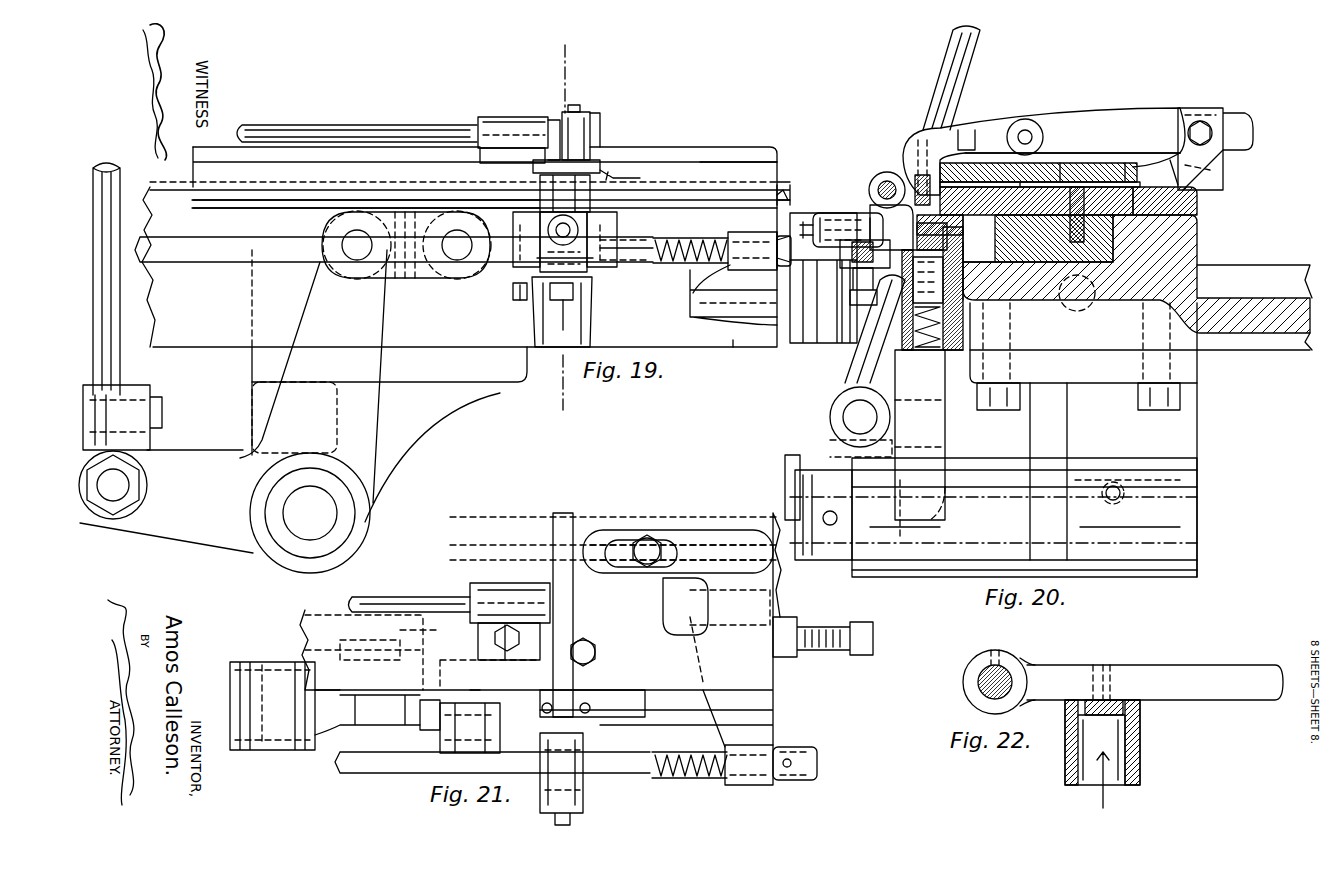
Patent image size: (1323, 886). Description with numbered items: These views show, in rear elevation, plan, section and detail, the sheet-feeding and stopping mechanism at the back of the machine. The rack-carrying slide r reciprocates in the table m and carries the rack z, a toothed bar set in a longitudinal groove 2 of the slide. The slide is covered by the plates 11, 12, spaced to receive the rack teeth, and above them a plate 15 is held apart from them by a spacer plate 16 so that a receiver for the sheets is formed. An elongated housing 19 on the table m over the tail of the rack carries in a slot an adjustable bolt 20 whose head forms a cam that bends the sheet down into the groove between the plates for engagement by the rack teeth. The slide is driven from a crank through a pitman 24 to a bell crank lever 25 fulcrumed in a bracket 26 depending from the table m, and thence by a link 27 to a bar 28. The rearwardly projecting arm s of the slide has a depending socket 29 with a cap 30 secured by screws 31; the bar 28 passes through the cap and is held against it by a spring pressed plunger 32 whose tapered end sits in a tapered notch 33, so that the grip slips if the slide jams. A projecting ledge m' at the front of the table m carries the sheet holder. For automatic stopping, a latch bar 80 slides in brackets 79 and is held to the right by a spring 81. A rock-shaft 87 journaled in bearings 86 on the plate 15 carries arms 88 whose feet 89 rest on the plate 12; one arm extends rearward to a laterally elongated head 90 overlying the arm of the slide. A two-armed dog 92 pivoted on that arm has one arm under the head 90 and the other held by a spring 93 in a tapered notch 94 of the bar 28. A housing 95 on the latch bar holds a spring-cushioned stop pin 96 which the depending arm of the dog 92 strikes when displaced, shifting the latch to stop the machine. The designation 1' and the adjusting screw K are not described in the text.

In FIG. 20, the cross-head plate 1' is at (1054, 238).
In FIG. 20, the longitudinal groove 2 is at (1137, 299).
In FIG. 19, the plate 11 is at (790, 203).
In FIG. 20, the plate 11 is at (1036, 201).
In FIG. 20, the plate 12 is at (1161, 201).
In FIG. 19, the plate 15 is at (770, 173).
In FIG. 20, the plate 15 is at (1080, 170).
In FIG. 21, the plate 15 is at (776, 597).
In FIG. 19, the spacer plate 16 is at (790, 187).
In FIG. 20, the spacer plate 16 is at (960, 238).
In FIG. 21, the elongated housing 19 is at (722, 537).
In FIG. 19, the bolt 20 is at (578, 225).
In FIG. 21, the bolt 20 is at (650, 546).
In FIG. 19, the pitman 24 is at (121, 322).
In FIG. 20, the pitman 24 is at (969, 95).
In FIG. 19, the bell crank lever 25 is at (187, 532).
In FIG. 20, the bell crank lever 25 is at (940, 433).
In FIG. 19, the bracket 26 is at (443, 432).
In FIG. 20, the bracket 26 is at (1195, 435).
In FIG. 19, the link 27 is at (431, 276).
In FIG. 21, the link 27 is at (307, 745).
In FIG. 19, the bar 28 is at (698, 238).
In FIG. 20, the bar 28 is at (970, 265).
In FIG. 21, the bar 28 is at (622, 712).
In FIG. 22, the bar 28 is at (1123, 682).
In FIG. 20, the depending socket 29 is at (903, 322).
In FIG. 19, the cap 30 is at (552, 312).
In FIG. 20, the cap 30 is at (936, 209).
In FIG. 21, the cap 30 is at (432, 727).
In FIG. 19, the screws 31 is at (603, 290).
In FIG. 21, the screws 31 is at (417, 648).
In FIG. 20, the spring pressed plunger 32 is at (945, 300).
In FIG. 22, the spring pressed plunger 32 is at (1140, 745).
In FIG. 21, the tapered notch 33 is at (565, 632).
In FIG. 22, the tapered notch 33 is at (1088, 698).
In FIG. 19, the brackets 79 is at (746, 243).
In FIG. 21, the brackets 79 is at (737, 785).
In FIG. 19, the latch bar 80 is at (280, 257).
In FIG. 20, the latch bar 80 is at (822, 301).
In FIG. 21, the latch bar 80 is at (388, 775).
In FIG. 19, the spring 81 is at (686, 263).
In FIG. 21, the spring 81 is at (682, 783).
In FIG. 19, the bearings 86 is at (508, 128).
In FIG. 20, the bearings 86 is at (993, 153).
In FIG. 21, the bearings 86 is at (505, 590).
In FIG. 19, the rock-shaft 87 is at (347, 131).
In FIG. 20, the rock-shaft 87 is at (1032, 125).
In FIG. 21, the rock-shaft 87 is at (397, 597).
In FIG. 19, the arms 88 is at (572, 130).
In FIG. 20, the arms 88 is at (1140, 115).
In FIG. 20, the feet 89 is at (1198, 173).
In FIG. 19, the laterally elongated head 90 is at (478, 202).
In FIG. 21, the laterally elongated head 90 is at (487, 688).
In FIG. 19, the two-armed dog 92 is at (567, 203).
In FIG. 20, the two-armed dog 92 is at (876, 186).
In FIG. 21, the two-armed dog 92 is at (475, 740).
In FIG. 20, the spring 93 is at (880, 205).
In FIG. 20, the tapered notch 94 is at (910, 258).
In FIG. 22, the tapered notch 94 is at (1110, 672).
In FIG. 19, the housing 95 is at (537, 263).
In FIG. 20, the housing 95 is at (855, 237).
In FIG. 20, the stop pin 96 is at (880, 245).
In FIG. 21, the adjusting screw K is at (815, 628).
In FIG. 19, the rearwardly projecting arm S is at (512, 286).
In FIG. 21, the rearwardly projecting arm S is at (598, 655).
In FIG. 19, the table m is at (736, 357).
In FIG. 20, the table m is at (823, 292).
In FIG. 20, the projecting ledge m' is at (1253, 348).
In FIG. 19, the rack-carrying slide r is at (790, 250).
In FIG. 20, the rack-carrying slide r is at (797, 250).
In FIG. 21, the rack-carrying slide r is at (794, 610).
In FIG. 19, the rack z is at (808, 193).
In FIG. 20, the rack z is at (1086, 224).
In FIG. 21, the rack z is at (789, 573).